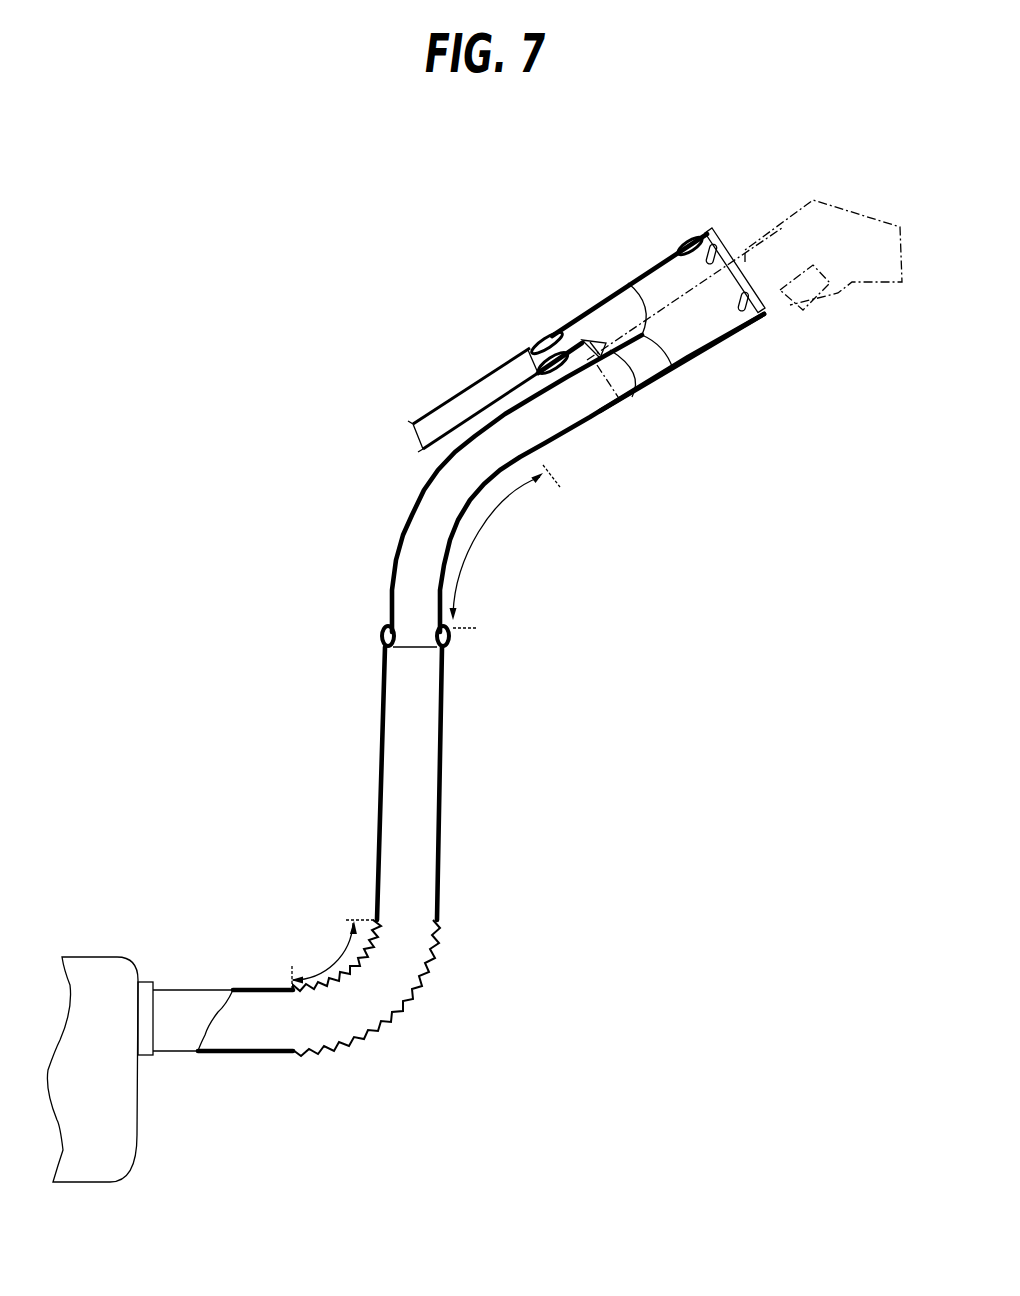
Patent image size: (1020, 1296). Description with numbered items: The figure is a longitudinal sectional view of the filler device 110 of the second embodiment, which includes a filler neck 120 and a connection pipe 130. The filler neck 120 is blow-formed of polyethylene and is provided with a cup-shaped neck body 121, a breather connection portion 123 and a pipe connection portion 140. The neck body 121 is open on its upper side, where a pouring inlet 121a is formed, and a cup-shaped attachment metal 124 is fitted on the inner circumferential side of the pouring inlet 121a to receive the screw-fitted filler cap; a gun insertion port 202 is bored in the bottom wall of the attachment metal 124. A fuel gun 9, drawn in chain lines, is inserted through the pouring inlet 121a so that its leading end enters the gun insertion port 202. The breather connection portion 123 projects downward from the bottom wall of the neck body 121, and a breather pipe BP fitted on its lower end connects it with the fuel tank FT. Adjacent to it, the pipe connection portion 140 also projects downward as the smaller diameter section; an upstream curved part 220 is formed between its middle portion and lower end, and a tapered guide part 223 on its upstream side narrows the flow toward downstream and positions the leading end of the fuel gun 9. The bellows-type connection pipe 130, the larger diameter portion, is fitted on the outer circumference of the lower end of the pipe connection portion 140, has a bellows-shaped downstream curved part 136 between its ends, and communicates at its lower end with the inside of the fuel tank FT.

The filler device 110 is at (338, 303).
The filler neck 120 is at (540, 265).
The neck body 121 is at (652, 276).
The pouring inlet 121a is at (722, 240).
The breather connection portion 123 is at (541, 336).
The attachment metal 124 is at (715, 309).
The connection pipe 130 is at (340, 788).
The downstream curved part 136 is at (365, 988).
The pipe connection portion 140 is at (413, 523).
The gun insertion port 202 is at (642, 335).
The upstream curved part 220 is at (505, 546).
The guide part 223 is at (634, 396).
The breather pipe BP is at (462, 392).
The fuel tank FT is at (100, 962).
The fuel gun 9 is at (860, 207).